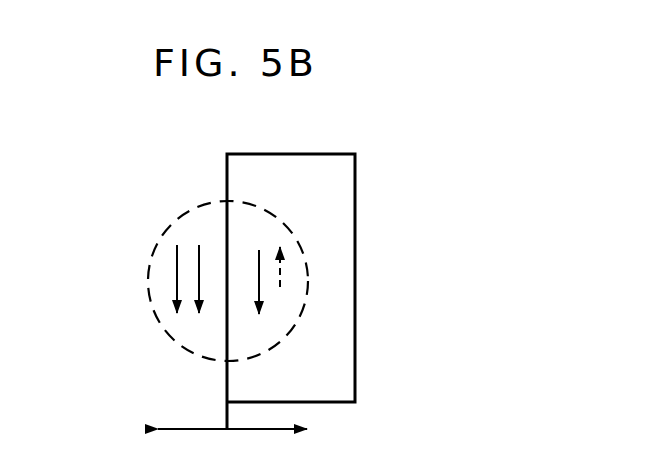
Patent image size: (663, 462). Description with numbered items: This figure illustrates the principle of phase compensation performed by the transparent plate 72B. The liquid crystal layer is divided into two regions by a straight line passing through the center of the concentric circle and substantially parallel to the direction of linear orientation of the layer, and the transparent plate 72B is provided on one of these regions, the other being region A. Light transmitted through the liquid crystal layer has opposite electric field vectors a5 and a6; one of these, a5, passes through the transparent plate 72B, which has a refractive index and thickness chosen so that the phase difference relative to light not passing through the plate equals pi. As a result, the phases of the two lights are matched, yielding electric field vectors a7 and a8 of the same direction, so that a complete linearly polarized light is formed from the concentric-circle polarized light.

The transparent plate 72B is at (335, 207).
The electric field vector a8 is at (199, 247).
The electric field vector a6 is at (177, 281).
The electric field vector a7 is at (259, 252).
The electric field vector a5 is at (280, 287).
The region A is at (232, 411).